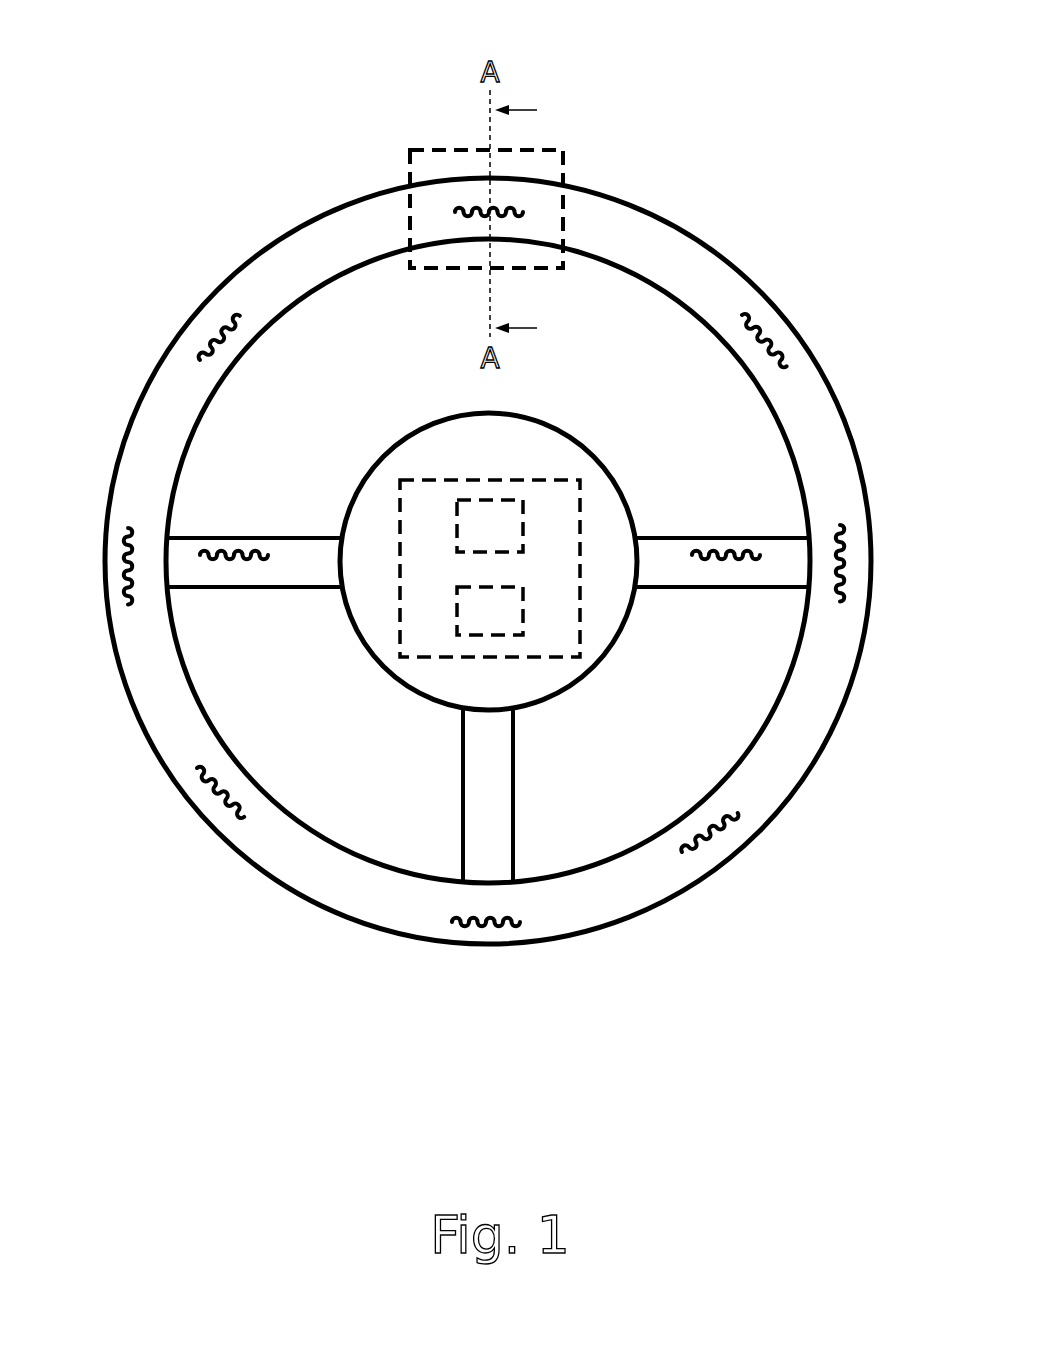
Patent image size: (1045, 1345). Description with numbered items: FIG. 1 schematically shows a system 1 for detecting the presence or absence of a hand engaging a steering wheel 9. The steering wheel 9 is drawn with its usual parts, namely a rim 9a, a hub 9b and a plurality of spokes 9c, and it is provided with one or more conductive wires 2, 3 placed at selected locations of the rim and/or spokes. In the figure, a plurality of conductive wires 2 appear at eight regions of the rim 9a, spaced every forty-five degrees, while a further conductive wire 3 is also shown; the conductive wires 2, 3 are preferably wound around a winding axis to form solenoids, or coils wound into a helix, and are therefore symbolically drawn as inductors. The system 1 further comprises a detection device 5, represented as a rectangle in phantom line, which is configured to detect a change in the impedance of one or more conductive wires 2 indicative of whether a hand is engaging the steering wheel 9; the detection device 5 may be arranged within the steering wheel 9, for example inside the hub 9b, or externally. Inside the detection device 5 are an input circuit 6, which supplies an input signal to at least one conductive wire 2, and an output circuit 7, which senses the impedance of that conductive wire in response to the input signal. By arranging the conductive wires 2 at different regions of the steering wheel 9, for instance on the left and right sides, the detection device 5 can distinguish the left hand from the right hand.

The system 1 is at (487, 559).
The conductive wire 2 is at (487, 553).
The conductive wire 3 is at (480, 204).
The detection device 5 is at (516, 588).
The input circuit 6 is at (482, 518).
The output circuit 7 is at (495, 610).
The steering wheel 9 is at (488, 609).
The rim 9a is at (333, 238).
The hub 9b is at (453, 412).
The spokes 9c is at (230, 595).